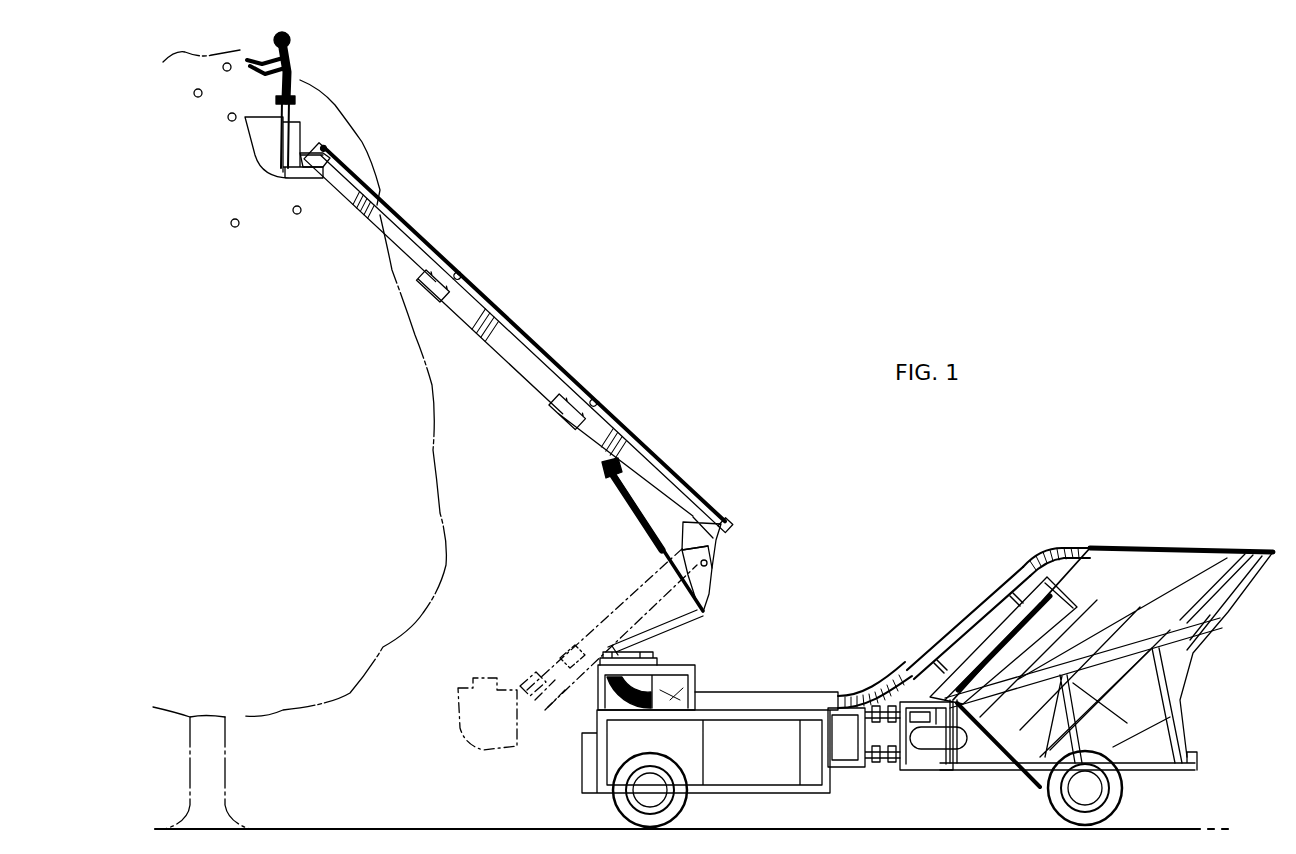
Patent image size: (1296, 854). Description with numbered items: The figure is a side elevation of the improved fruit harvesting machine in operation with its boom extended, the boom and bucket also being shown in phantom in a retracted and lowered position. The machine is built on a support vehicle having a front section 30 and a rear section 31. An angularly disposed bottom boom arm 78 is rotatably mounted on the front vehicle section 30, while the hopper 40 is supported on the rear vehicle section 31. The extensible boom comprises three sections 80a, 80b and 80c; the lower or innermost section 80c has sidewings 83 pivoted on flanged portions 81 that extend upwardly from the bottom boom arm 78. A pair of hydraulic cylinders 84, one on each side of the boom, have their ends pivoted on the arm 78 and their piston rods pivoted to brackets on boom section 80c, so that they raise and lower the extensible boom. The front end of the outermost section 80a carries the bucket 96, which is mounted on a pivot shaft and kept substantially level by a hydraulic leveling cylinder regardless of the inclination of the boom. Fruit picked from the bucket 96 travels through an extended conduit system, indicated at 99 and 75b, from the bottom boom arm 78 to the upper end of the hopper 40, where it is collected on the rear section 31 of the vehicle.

The bucket 96 is at (272, 176).
The boom section 80a is at (372, 222).
The boom section 80b is at (531, 362).
The boom section 80c is at (643, 468).
The hydraulic cylinders 84 is at (653, 540).
The sidewings 83 is at (710, 547).
The flanged portions 81 is at (705, 588).
The bottom boom arm 78 is at (667, 647).
The front section 30 is at (712, 680).
The conduit system 99 is at (827, 695).
The conduit system 75b is at (963, 620).
The hopper 40 is at (1140, 557).
The rear section 31 is at (1186, 701).